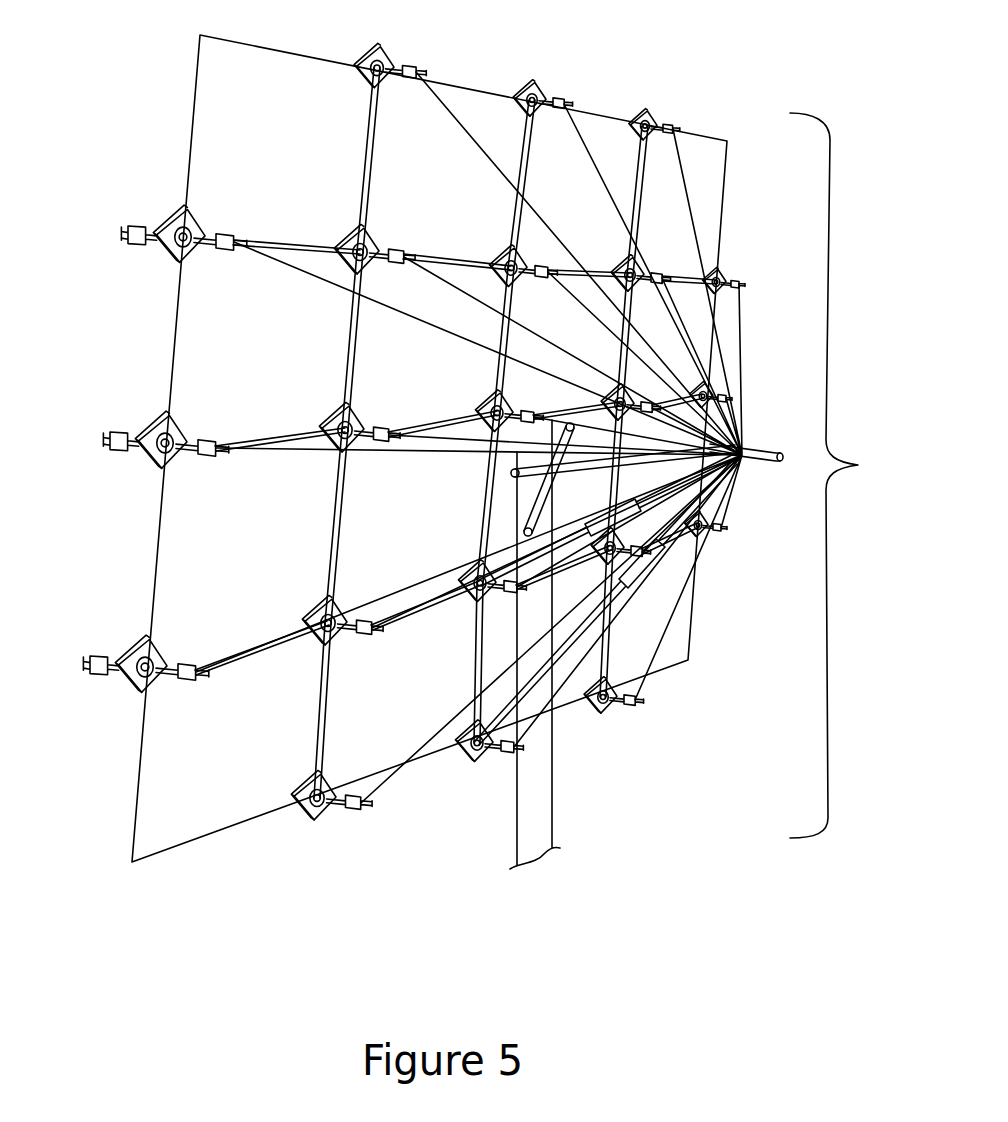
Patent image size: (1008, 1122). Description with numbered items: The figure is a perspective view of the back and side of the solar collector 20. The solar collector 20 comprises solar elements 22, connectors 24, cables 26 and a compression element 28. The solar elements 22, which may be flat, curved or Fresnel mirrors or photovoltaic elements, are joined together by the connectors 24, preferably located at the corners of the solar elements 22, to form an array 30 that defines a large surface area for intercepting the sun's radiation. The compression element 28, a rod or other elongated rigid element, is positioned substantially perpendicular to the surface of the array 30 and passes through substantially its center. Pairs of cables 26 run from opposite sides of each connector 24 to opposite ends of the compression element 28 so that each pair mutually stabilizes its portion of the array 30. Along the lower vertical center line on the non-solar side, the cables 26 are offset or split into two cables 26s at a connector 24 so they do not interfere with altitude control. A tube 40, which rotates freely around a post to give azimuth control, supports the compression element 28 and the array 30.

The solar collector 20 is at (476, 49).
The solar element 22 is at (282, 160).
The connector 24 is at (178, 260).
The cable 26 is at (282, 455).
The split cable 26s is at (535, 685).
The compression element 28 is at (760, 462).
The array 30 is at (846, 475).
The tube 40 is at (540, 818).